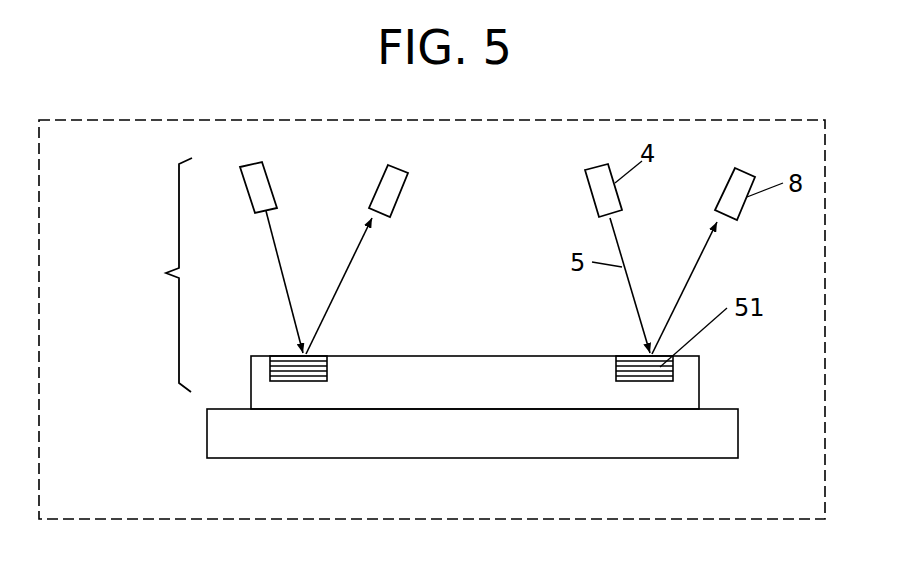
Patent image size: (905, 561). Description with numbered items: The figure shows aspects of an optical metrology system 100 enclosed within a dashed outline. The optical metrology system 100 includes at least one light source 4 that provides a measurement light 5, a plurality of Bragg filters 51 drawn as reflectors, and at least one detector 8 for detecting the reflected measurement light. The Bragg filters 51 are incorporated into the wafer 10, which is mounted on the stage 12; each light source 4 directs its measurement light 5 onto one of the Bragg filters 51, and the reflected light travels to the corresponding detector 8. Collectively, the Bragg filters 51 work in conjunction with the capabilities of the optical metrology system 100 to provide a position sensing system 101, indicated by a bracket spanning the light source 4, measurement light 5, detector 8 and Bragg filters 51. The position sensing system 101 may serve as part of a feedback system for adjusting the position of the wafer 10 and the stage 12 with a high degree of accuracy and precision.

The optical metrology system 100 is at (637, 120).
The position sensing system 101 is at (151, 275).
The light source 4 is at (258, 182).
The measurement light 5 is at (278, 261).
The detector 8 is at (388, 192).
The wafer 10 is at (470, 375).
The stage 12 is at (417, 435).
The Bragg filters 51 is at (288, 363).